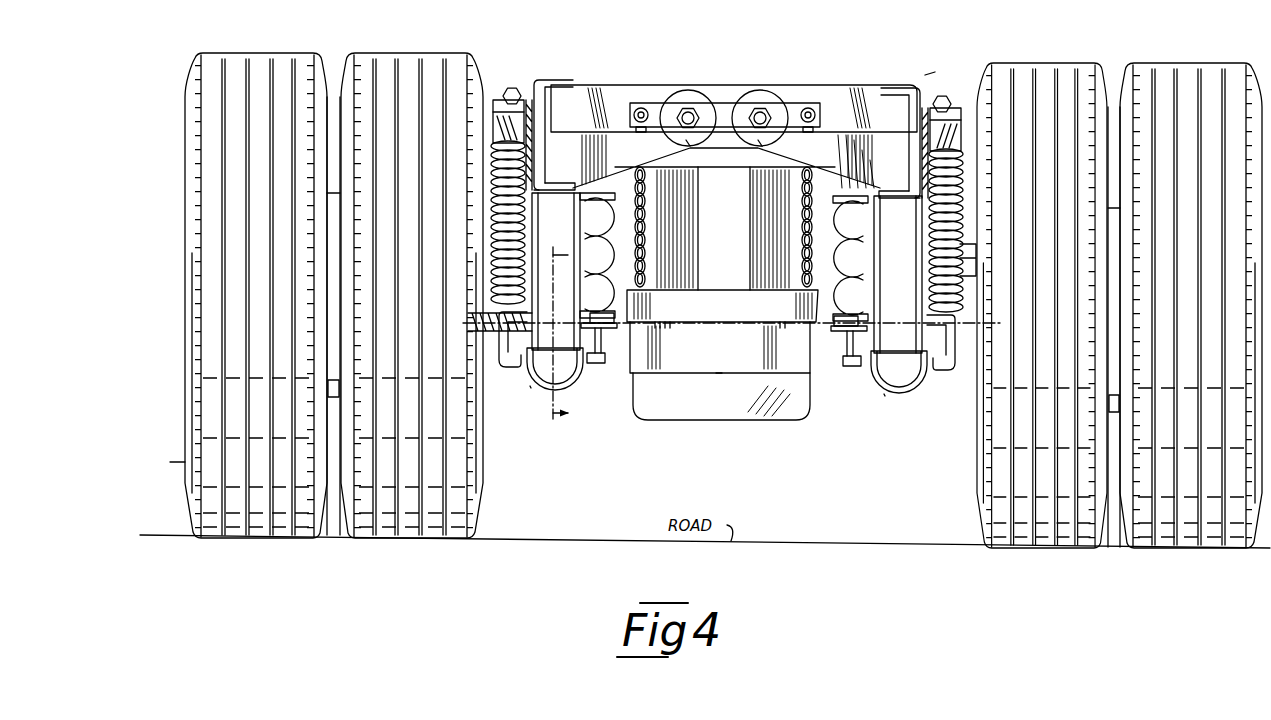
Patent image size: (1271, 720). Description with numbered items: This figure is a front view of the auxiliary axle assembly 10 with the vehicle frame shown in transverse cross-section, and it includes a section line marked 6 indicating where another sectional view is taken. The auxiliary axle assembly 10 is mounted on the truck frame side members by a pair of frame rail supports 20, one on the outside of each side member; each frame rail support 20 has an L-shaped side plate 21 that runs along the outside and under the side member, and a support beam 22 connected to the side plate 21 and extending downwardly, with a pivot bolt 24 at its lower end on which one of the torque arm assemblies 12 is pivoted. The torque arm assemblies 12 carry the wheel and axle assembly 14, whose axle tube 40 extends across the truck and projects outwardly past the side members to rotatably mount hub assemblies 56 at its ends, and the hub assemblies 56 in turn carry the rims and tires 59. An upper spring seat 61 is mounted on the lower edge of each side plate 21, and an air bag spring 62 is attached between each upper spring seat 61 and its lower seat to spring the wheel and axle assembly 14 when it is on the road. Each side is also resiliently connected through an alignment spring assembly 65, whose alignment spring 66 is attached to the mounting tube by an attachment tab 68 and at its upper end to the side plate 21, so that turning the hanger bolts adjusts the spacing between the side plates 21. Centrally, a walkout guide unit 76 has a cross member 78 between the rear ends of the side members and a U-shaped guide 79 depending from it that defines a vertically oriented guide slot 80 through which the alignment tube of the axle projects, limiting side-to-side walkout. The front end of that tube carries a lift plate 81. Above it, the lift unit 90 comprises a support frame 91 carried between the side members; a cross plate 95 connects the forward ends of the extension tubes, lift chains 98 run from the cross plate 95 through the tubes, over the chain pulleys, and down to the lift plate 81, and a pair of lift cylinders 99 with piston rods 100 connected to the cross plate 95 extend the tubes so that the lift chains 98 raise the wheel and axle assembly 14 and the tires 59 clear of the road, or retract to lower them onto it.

The auxiliary axle assembly 10 is at (938, 66).
The torque arm assemblies 12 is at (528, 388).
The wheel and axle assembly 14 is at (166, 463).
The frame rail supports 20 is at (530, 83).
The side plate 21 is at (540, 124).
The support beam 22 is at (547, 189).
The pivot bolt 24 is at (515, 350).
The axle tube 40 is at (735, 286).
The hub assemblies 56 is at (335, 222).
The tires 59 is at (365, 56).
The upper spring seat 61 is at (592, 200).
The air bag spring 62 is at (618, 255).
The alignment spring assembly 65 is at (522, 290).
The alignment spring 66 is at (934, 300).
The attachment tab 68 is at (513, 370).
The walkout guide unit 76 is at (690, 421).
The cross member 78 is at (856, 92).
The U-shaped guide 79 is at (740, 422).
The guide slot 80 is at (722, 374).
The lift plate 81 is at (776, 297).
The lift unit 90 is at (733, 89).
The support frame 91 is at (855, 122).
The cross plate 95 is at (655, 101).
The lift chains 98 is at (648, 212).
The lift cylinders 99 is at (700, 92).
The piston rods 100 is at (690, 143).
The section line 6- 6 is at (563, 334).